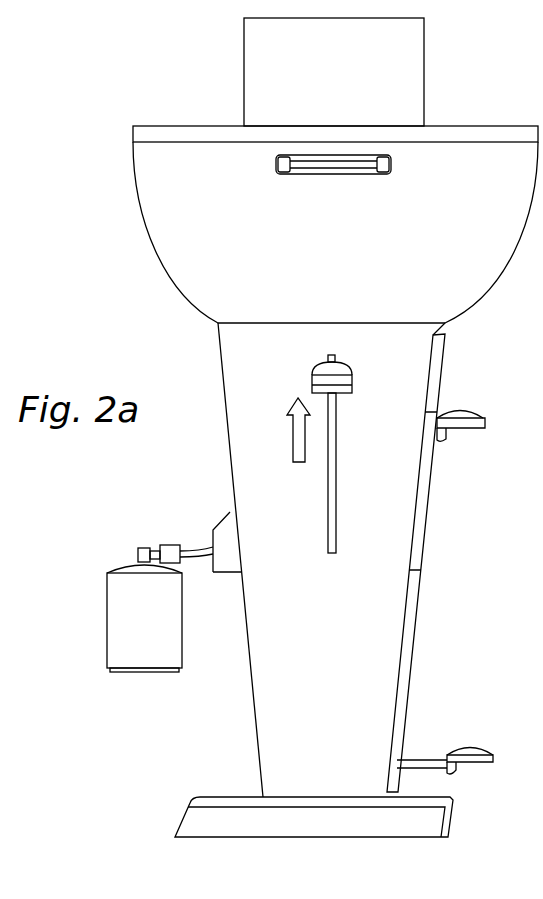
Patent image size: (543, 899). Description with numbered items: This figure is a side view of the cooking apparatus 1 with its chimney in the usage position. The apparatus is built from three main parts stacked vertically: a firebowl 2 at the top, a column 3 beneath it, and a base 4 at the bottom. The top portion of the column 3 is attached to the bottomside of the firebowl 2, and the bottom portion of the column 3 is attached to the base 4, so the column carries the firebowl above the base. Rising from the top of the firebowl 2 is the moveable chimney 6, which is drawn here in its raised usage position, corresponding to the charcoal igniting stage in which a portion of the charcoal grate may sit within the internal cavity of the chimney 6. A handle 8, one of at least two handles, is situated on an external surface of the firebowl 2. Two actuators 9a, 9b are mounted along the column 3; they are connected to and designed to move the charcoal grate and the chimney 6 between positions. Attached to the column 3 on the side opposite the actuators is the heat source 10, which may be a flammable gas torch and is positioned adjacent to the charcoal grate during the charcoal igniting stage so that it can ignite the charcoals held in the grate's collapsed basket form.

The cooking apparatus 1 is at (447, 498).
The firebowl 2 is at (500, 256).
The column 3 is at (395, 615).
The base 4 is at (392, 832).
The chimney 6 is at (417, 50).
The handle 8 is at (392, 162).
The actuator 9a is at (462, 748).
The actuator 9b is at (345, 380).
The heat source 10 is at (125, 662).